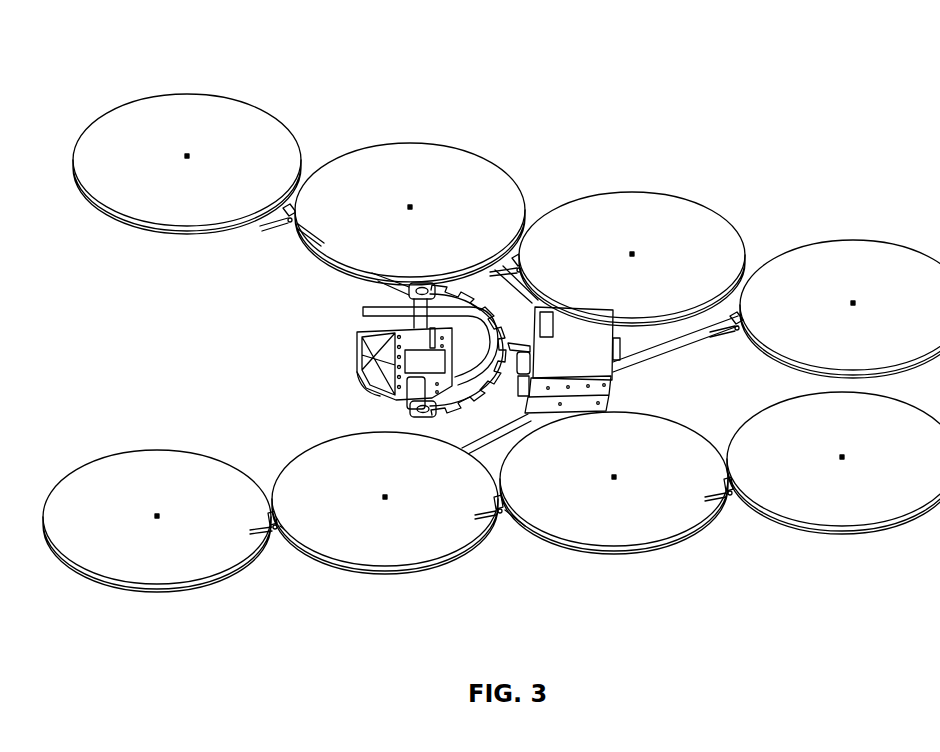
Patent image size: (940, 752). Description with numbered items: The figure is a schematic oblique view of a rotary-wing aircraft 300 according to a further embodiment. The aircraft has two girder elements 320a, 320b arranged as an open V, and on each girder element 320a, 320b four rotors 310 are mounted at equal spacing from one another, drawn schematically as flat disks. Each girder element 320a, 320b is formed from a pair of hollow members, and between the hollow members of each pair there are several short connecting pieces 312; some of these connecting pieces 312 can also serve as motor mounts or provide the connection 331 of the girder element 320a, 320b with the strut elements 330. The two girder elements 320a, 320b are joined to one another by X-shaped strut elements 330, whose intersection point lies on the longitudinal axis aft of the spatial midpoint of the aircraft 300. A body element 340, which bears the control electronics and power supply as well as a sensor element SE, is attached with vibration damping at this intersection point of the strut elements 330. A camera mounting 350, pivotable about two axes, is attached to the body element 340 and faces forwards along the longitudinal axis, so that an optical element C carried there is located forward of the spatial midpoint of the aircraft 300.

The aircraft 300 is at (818, 51).
The rotor 310 is at (868, 255).
The connecting piece 312 is at (271, 505).
The girder element 320a is at (500, 533).
The girder element 320b is at (288, 222).
The X-shaped strut element 330 is at (693, 343).
The connection 331 is at (268, 552).
The body element 340 is at (573, 323).
The camera mounting 350 is at (412, 343).
The sensor element SE is at (548, 310).
The optical element C is at (372, 386).